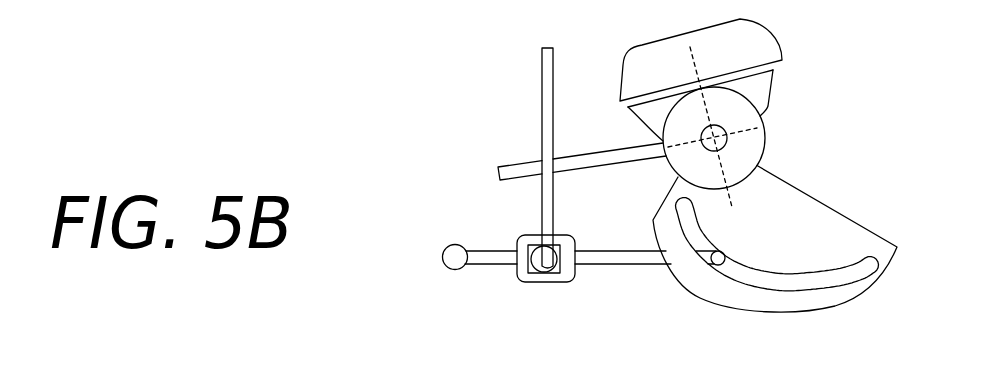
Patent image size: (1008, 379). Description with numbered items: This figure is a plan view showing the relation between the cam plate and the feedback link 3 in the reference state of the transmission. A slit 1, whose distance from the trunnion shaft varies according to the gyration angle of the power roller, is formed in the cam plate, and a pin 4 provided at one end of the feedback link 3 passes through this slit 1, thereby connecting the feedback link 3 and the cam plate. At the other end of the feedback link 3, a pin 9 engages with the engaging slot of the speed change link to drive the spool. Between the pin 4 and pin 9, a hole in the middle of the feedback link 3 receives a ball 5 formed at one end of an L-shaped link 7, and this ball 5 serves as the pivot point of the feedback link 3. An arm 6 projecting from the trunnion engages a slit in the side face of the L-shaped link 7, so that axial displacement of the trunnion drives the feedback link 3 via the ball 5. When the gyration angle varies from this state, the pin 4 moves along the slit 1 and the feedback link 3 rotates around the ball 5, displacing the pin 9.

The slit 1 is at (850, 282).
The feedback link 3 is at (630, 264).
The pin 4 is at (723, 267).
The ball 5 is at (562, 282).
The arm 6 is at (573, 153).
The L-shaped link 7 is at (543, 92).
The pin 9 is at (458, 270).